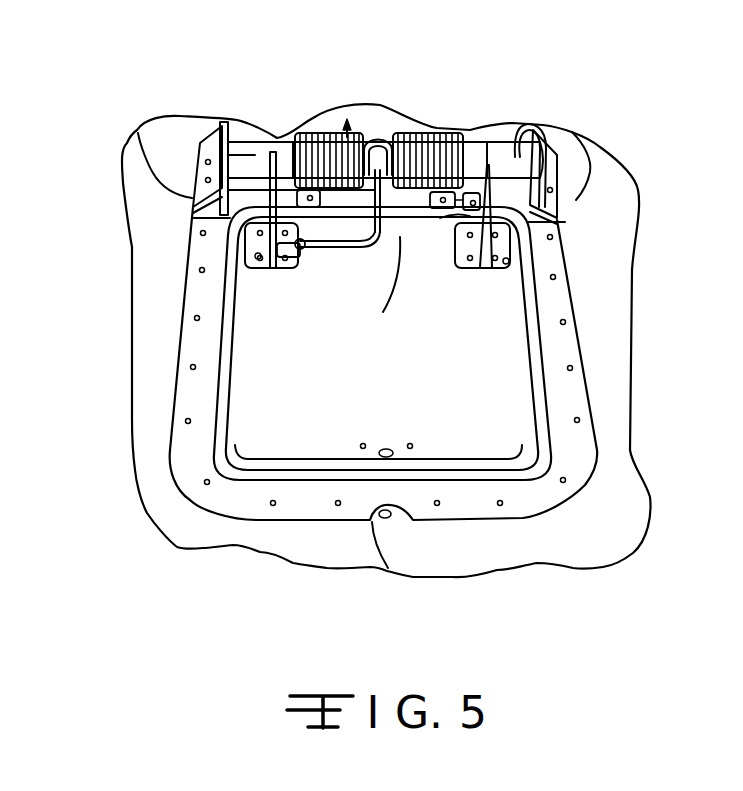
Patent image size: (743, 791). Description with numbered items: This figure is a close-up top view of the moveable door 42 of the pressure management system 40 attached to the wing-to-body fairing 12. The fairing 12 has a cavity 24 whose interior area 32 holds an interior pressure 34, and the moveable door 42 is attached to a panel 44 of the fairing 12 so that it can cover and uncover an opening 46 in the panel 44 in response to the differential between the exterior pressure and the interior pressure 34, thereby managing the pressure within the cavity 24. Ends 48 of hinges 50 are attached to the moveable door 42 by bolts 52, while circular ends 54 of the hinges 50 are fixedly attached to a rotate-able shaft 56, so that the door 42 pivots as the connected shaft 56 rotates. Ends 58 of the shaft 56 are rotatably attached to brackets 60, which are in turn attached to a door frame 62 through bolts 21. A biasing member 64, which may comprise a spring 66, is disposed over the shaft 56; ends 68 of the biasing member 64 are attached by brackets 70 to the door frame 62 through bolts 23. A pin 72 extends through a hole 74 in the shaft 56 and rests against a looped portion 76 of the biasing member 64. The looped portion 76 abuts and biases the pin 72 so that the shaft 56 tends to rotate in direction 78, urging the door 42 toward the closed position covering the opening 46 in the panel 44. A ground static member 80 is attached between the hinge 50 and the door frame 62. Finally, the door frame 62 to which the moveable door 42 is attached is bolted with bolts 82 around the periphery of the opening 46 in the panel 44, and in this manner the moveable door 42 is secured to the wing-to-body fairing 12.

The wing-to-body fairing 12 is at (137, 130).
The bolts 21 is at (158, 157).
The bolts 23 is at (310, 193).
The cavity 24 is at (178, 527).
The interior area 32 is at (312, 552).
The interior pressure 34 is at (255, 543).
The pressure management system 40 is at (233, 412).
The moveable door 42 is at (257, 367).
The panel 44 is at (170, 262).
The opening 46 is at (387, 570).
The ends 48 is at (260, 268).
The hinges 50 is at (274, 270).
The bolts 52 is at (255, 256).
The circular ends 54 is at (271, 150).
The rotate-able shaft 56 is at (517, 157).
The ends 58 is at (232, 125).
The brackets 60 is at (213, 155).
The door frame 62 is at (237, 207).
The biasing member 64 is at (415, 147).
The spring 66 is at (435, 116).
The ends 68 is at (450, 218).
The brackets 70 is at (352, 253).
The pin 72 is at (368, 143).
The hole 74 is at (390, 143).
The looped portion 76 is at (433, 200).
The direction 78 is at (374, 240).
The ground static member 80 is at (330, 250).
The bolts 82 is at (187, 421).